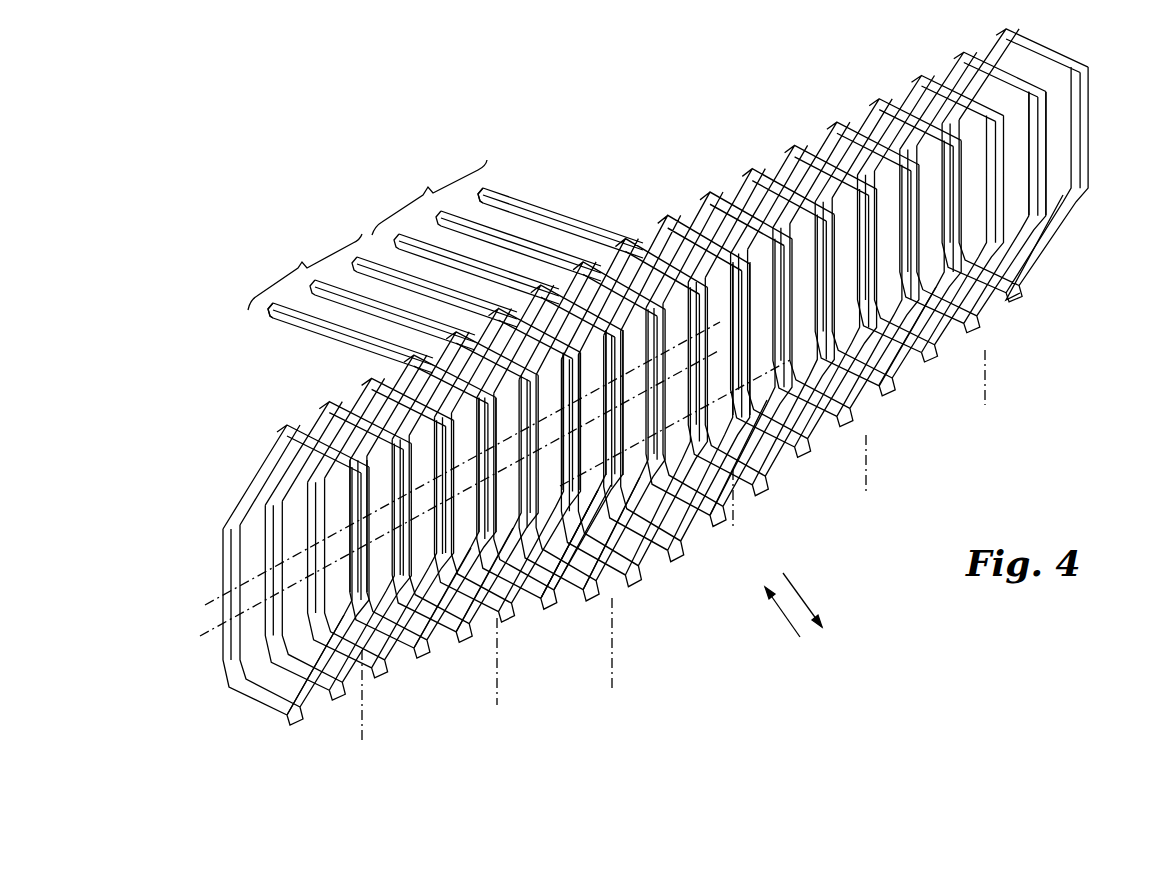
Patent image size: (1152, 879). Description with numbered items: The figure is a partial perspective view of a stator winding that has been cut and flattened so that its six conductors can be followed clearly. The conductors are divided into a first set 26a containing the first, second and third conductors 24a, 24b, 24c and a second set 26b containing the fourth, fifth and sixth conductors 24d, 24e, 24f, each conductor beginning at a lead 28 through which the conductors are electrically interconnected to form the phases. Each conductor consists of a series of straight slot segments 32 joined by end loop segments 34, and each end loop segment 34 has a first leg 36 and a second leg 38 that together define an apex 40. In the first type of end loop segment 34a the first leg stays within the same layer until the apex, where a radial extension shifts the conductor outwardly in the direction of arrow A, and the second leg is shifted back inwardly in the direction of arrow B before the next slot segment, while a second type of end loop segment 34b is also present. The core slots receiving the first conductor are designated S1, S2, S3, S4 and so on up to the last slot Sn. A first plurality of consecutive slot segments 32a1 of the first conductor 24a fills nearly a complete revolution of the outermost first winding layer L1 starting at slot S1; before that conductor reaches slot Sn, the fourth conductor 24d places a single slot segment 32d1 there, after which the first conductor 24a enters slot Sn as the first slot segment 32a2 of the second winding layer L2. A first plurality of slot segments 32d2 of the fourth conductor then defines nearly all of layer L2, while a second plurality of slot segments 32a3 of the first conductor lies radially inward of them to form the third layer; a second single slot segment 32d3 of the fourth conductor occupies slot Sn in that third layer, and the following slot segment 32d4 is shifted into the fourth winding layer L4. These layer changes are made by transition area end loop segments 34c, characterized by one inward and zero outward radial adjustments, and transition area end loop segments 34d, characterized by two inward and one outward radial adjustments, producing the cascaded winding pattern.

The first conductor 24a is at (470, 252).
The second conductor 24b is at (532, 238).
The third conductor 24c is at (597, 221).
The fourth conductor 24d is at (303, 332).
The fifth conductor 24e is at (373, 313).
The sixth conductor 24f is at (440, 300).
The first set of conductors 26a is at (507, 232).
The second set of conductors 26b is at (380, 316).
The lead 28 is at (497, 185).
The slot segment 32 is at (1089, 118).
The first plurality of consecutive slot segments of the first conductor 32a1 is at (365, 598).
The first slot segment of the second winding layer 32a2 is at (500, 520).
The second plurality of consecutive slot segments of the first conductor 32a3 is at (622, 470).
The single slot segment of the fourth conductor 32d1 is at (490, 540).
The first plurality of consecutive slot segments of the fourth conductor 32d2 is at (368, 583).
The second single slot segment of the fourth conductor 32d3 is at (512, 505).
The following slot segment of the fourth conductor 32d4 is at (650, 455).
The end loop segment 34 is at (832, 110).
The first type of end loop segment 34a is at (881, 92).
The second type of end loop segment 34b is at (720, 190).
The transition area end loop segment 34c is at (600, 603).
The transition area end loop segment 34d is at (378, 440).
The first leg 36 is at (1030, 212).
The second leg 38 is at (906, 385).
The apex 40 is at (1015, 312).
The first winding layer L1 is at (206, 602).
The second winding layer L2 is at (200, 634).
The fourth winding layer L4 is at (762, 458).
The first core slot S1 is at (612, 672).
The second core slot S2 is at (733, 522).
The third core slot S3 is at (866, 480).
The fourth core slot S4 is at (985, 397).
The last core slot Sn is at (497, 688).
The radially outward direction A is at (784, 618).
The radially inward direction B is at (800, 592).